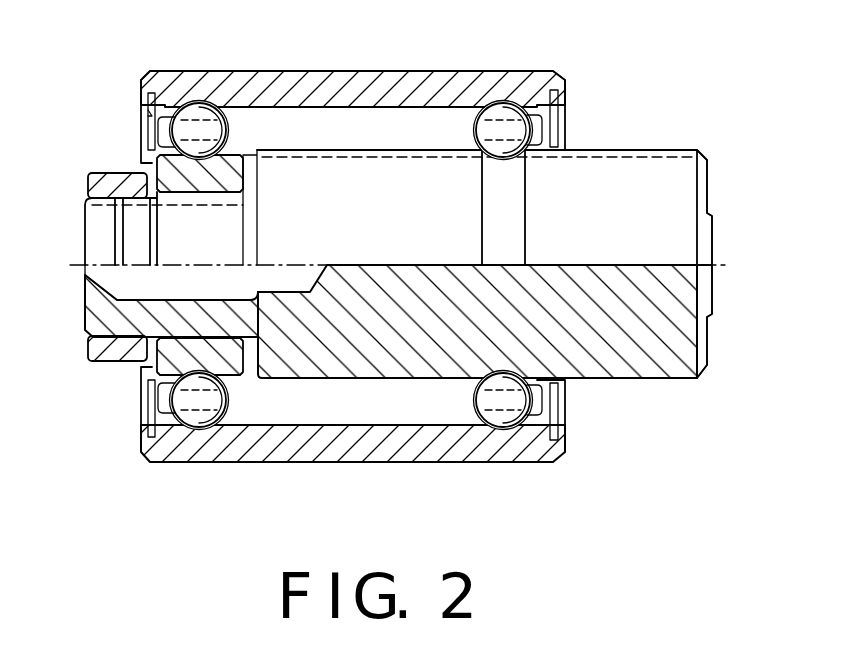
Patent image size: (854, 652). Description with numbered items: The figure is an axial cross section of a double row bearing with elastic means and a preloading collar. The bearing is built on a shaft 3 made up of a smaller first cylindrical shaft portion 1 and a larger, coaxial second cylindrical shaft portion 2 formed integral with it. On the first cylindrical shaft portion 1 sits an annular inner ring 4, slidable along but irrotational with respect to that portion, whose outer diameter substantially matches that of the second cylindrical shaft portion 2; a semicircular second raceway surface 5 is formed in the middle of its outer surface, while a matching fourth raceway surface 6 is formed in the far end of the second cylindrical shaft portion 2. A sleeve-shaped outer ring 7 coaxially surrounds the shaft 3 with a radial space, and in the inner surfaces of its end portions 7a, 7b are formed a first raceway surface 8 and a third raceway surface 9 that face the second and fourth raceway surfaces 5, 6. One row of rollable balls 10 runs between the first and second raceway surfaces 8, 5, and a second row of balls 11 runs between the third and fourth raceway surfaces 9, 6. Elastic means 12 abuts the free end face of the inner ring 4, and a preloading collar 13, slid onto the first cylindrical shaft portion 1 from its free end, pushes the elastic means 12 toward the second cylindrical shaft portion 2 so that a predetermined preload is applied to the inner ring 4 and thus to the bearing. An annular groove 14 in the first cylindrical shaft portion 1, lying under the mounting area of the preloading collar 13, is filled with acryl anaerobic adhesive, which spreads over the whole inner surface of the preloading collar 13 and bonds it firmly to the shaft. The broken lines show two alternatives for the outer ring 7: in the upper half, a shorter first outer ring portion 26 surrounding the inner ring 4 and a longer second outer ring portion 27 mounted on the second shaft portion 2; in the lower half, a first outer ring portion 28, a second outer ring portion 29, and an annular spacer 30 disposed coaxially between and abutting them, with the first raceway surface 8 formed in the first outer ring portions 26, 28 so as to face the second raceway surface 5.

The first cylindrical shaft portion 1 is at (160, 228).
The second cylindrical shaft portion 2 is at (613, 167).
The shaft 3 is at (713, 197).
The inner ring 4 is at (160, 376).
The second raceway surface 5 is at (170, 420).
The fourth raceway surface 6 is at (532, 398).
The outer ring 7 is at (350, 72).
The end portion of the outer ring 7a is at (200, 72).
The end portion of the outer ring 7b is at (508, 72).
The first raceway surface 8 is at (157, 112).
The third raceway surface 9 is at (567, 112).
The balls 10 is at (200, 428).
The balls 11 is at (512, 435).
The elastic means 12 is at (153, 160).
The preloading collar 13 is at (90, 182).
The annular groove 14 is at (117, 252).
The first outer ring portion 26 is at (238, 72).
The second outer ring portion 27 is at (400, 72).
The first outer ring portion 28 is at (216, 452).
The second outer ring portion 29 is at (466, 444).
The annular spacer 30 is at (335, 450).